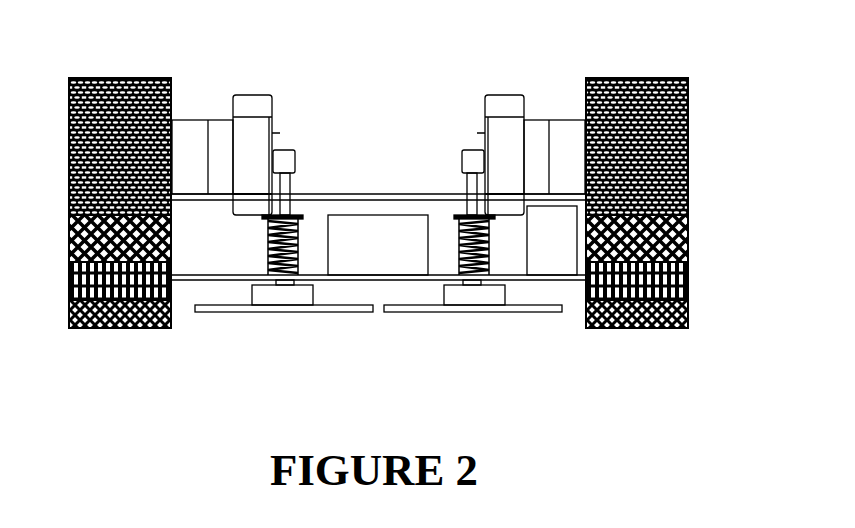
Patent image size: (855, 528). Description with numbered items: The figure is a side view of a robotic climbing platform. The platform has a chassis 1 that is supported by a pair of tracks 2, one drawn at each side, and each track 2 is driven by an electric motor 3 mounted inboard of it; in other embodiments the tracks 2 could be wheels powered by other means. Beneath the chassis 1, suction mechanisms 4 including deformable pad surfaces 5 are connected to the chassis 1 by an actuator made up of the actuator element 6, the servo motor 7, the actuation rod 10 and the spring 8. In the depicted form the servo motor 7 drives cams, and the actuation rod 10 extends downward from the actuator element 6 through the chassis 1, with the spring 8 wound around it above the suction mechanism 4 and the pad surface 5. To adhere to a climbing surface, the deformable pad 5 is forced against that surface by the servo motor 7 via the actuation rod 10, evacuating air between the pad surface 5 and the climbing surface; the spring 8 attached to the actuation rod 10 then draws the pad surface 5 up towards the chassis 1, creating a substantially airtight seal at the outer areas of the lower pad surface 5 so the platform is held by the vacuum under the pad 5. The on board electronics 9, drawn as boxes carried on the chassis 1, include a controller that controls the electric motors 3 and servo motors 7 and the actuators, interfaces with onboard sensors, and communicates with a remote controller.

The chassis 1 is at (385, 194).
The tracks 2 is at (113, 78).
The electric motor 3 is at (200, 128).
The suction mechanism 4 is at (266, 297).
The deformable pad surface 5 is at (341, 310).
The actuator 6 is at (291, 150).
The servo motor 7 is at (252, 137).
The spring 8 is at (270, 233).
The on board electronics 9 is at (408, 250).
The actuation rod 10 is at (288, 189).